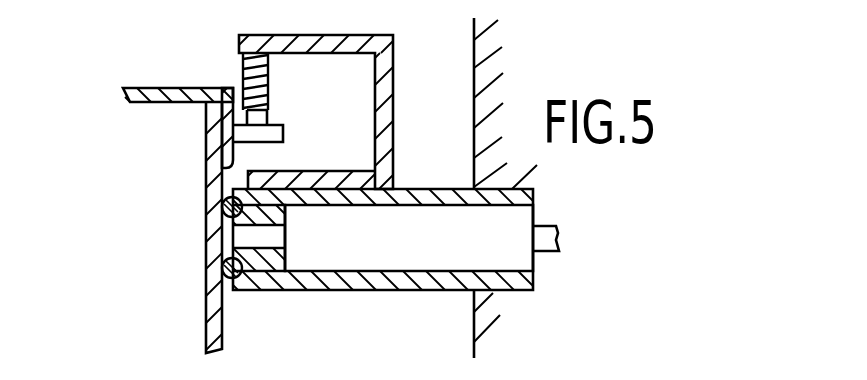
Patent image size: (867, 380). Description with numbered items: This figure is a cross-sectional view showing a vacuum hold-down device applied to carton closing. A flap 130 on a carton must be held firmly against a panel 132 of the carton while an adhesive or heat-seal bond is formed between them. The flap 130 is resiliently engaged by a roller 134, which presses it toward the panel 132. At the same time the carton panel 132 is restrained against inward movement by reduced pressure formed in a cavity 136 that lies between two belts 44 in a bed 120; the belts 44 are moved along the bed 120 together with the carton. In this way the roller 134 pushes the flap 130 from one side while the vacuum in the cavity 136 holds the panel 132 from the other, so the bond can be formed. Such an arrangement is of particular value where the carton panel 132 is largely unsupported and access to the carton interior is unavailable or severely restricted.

The flap 130 is at (220, 127).
The panel 132 is at (222, 316).
The roller 134 is at (284, 130).
The belts 44 is at (222, 262).
The bed 120 is at (300, 289).
The cavity 136 is at (434, 246).